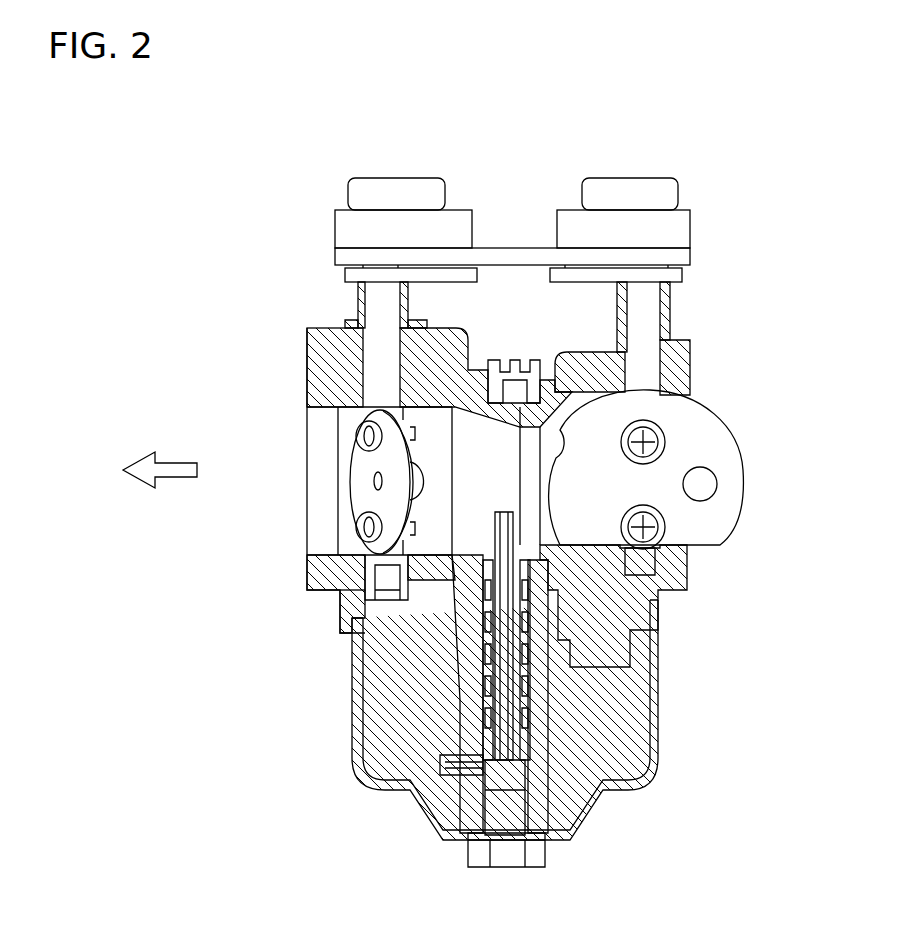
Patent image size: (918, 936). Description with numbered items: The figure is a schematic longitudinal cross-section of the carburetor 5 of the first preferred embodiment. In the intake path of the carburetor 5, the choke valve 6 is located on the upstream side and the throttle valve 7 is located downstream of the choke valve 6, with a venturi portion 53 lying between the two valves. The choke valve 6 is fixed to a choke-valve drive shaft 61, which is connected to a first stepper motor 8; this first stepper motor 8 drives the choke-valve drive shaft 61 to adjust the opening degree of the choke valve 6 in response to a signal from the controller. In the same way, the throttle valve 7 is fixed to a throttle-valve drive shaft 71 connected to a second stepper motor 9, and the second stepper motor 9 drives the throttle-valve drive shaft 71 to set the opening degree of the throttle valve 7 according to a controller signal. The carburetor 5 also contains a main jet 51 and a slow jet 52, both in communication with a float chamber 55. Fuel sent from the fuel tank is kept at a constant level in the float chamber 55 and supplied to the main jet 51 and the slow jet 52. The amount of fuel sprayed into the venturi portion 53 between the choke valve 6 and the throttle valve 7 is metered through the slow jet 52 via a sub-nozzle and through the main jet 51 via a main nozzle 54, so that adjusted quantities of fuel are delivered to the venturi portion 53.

The carburetor 5 is at (727, 119).
The choke valve 6 is at (708, 406).
The throttle valve 7 is at (352, 462).
The first stepper motor 8 is at (680, 190).
The second stepper motor 9 is at (394, 178).
The main jet 51 is at (440, 758).
The slow jet 52 is at (510, 360).
The venturi portion 53 is at (516, 470).
The main nozzle 54 is at (522, 700).
The float chamber 55 is at (640, 745).
The choke-valve drive shaft 61 is at (650, 305).
The throttle-valve drive shaft 71 is at (383, 300).